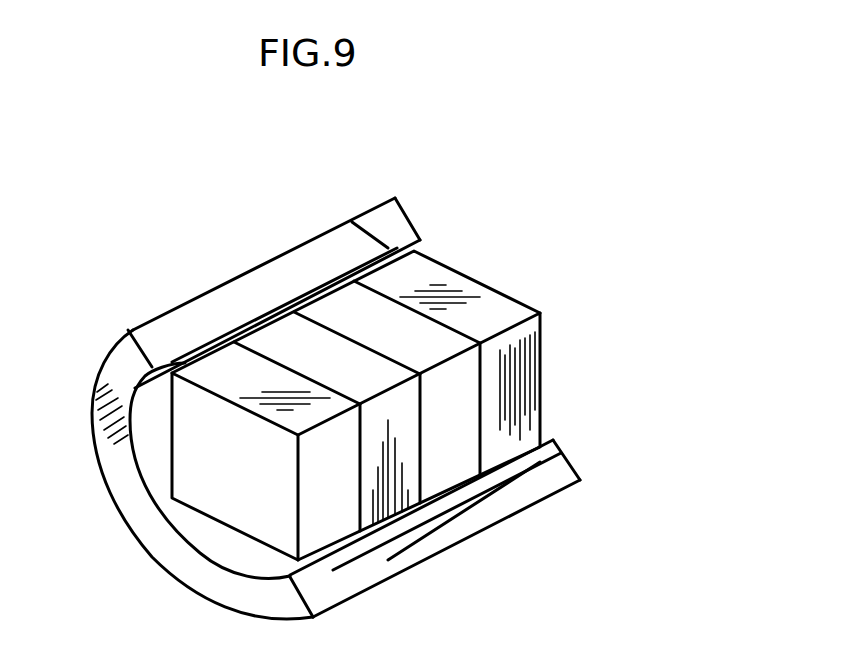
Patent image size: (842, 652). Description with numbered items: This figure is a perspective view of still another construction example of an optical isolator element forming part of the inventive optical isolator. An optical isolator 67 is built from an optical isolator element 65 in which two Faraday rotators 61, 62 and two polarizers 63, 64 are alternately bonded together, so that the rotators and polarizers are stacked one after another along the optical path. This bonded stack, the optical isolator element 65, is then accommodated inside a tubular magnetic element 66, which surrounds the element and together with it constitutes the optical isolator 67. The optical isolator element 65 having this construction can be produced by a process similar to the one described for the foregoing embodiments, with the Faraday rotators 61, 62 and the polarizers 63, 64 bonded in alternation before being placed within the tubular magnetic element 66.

The Faraday rotator 61 is at (157, 321).
The Faraday rotator 62 is at (322, 283).
The polarizer 63 is at (228, 318).
The polarizer 64 is at (355, 203).
The optical isolator element 65 is at (250, 260).
The tubular magnetic element 66 is at (188, 566).
The optical isolator 67 is at (600, 351).